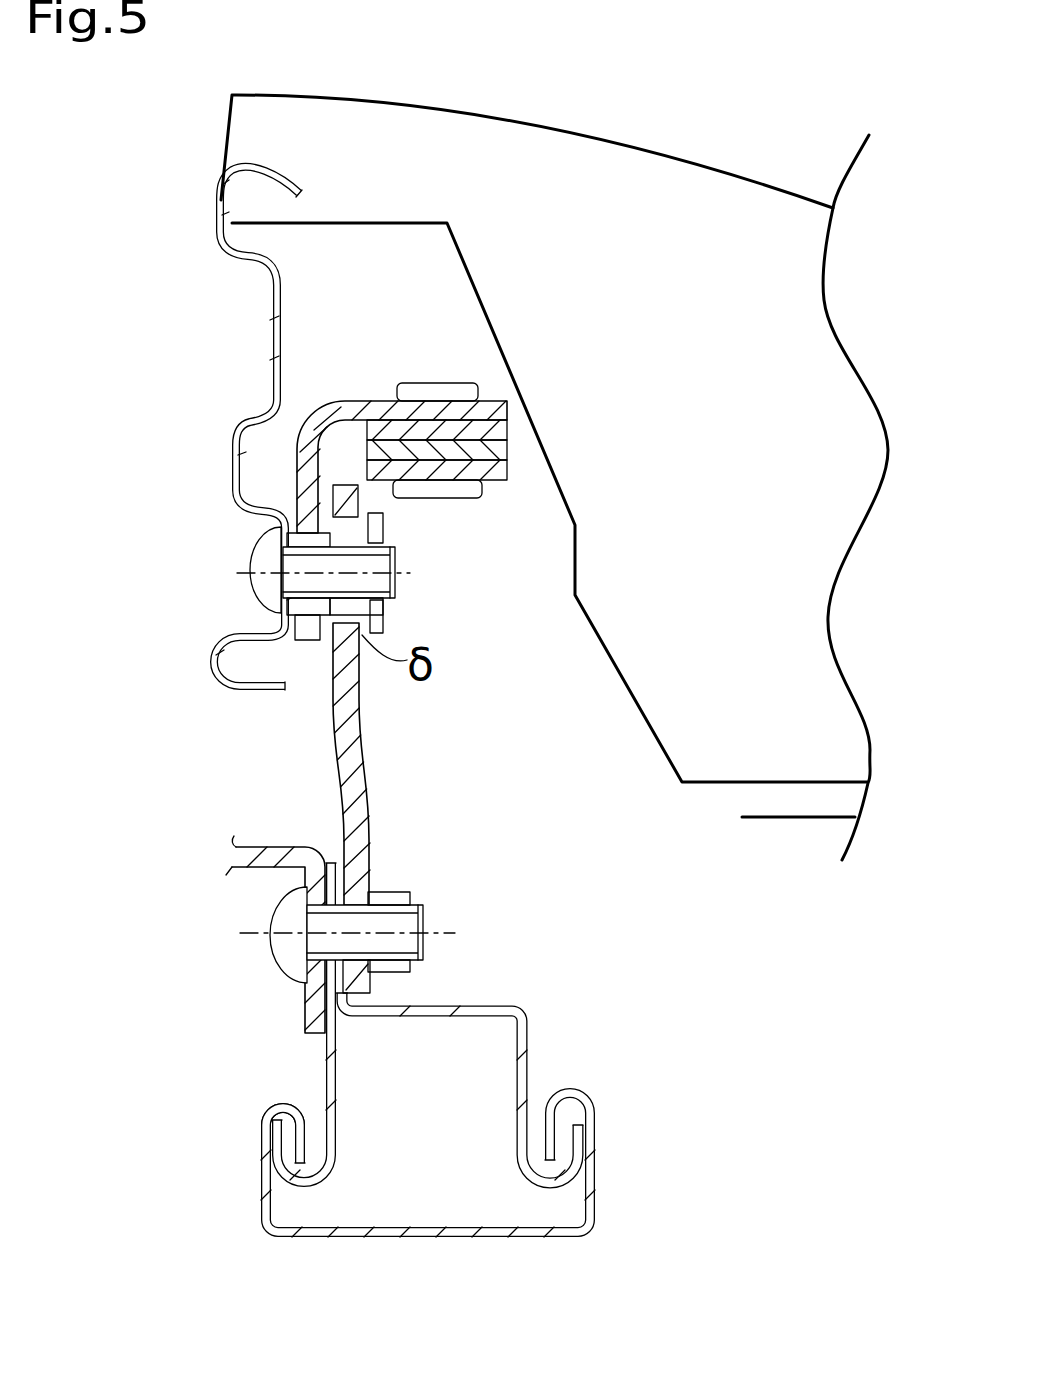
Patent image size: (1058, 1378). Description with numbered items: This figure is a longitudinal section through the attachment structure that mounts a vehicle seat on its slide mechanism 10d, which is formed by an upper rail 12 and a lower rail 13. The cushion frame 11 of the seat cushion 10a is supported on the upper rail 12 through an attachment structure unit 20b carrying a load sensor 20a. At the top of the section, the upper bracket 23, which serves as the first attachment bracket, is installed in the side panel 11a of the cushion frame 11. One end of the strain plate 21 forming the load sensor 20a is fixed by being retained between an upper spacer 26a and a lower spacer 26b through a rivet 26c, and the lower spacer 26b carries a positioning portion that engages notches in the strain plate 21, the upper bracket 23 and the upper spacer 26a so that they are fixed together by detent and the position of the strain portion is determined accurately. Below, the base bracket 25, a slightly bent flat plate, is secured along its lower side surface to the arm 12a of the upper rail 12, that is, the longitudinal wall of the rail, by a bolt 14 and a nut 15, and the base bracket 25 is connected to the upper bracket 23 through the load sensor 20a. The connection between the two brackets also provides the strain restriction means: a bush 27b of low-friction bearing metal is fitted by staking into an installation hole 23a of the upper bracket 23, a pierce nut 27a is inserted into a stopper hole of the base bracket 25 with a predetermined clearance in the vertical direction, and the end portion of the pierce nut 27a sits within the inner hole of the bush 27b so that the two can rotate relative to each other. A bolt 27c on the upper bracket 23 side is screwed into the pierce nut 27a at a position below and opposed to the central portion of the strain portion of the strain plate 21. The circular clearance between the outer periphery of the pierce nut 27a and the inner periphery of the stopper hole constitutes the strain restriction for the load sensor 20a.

The seat cushion 10a is at (668, 127).
The slide mechanism 10d is at (250, 1118).
The cushion frame 11 is at (633, 703).
The side panel 11a is at (272, 329).
The upper rail 12 is at (527, 1040).
The arm 12a is at (368, 857).
The lower rail 13 is at (597, 1210).
The bolt 14 is at (282, 950).
The nut 15 is at (397, 893).
The load sensor 20a is at (522, 449).
The attachment structure unit 20b is at (322, 746).
The strain plate 21 is at (510, 470).
The upper bracket 23 is at (358, 401).
The installation hole 23a is at (265, 552).
The base bracket 25 is at (360, 533).
The upper spacer 26a is at (507, 425).
The lower spacer 26b is at (485, 493).
The rivet 26c is at (447, 383).
The pierce nut 27a is at (372, 615).
The bush 27b is at (268, 608).
The bolt 27c is at (395, 585).